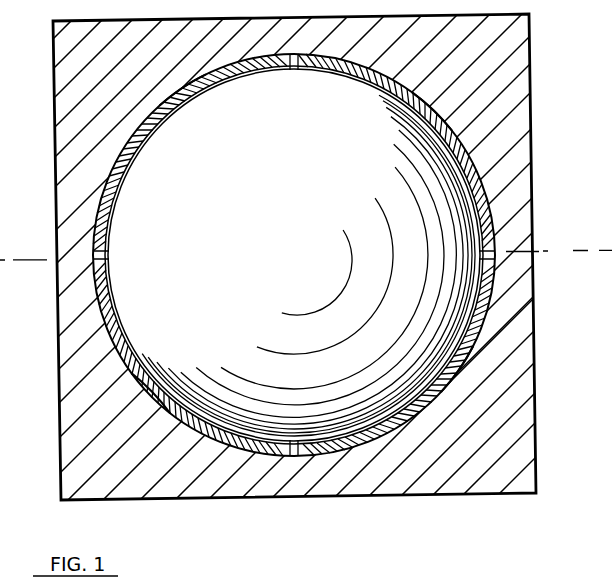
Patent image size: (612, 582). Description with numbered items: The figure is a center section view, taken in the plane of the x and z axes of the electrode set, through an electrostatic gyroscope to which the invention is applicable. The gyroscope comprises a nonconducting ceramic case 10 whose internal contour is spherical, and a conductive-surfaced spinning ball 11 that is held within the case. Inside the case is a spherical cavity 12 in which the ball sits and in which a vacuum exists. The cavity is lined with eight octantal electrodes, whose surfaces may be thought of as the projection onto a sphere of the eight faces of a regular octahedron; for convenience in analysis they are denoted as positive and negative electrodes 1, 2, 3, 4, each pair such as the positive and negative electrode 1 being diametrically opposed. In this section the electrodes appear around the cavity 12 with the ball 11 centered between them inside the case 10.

The nonconducting ceramic case 10 is at (479, 77).
The conductive-surfaced spinning ball 11 is at (439, 200).
The spherical cavity 12 is at (117, 160).
The electrode pair +1, - 1 is at (459, 369).
The electrode pair +2, - 2 is at (181, 90).
The electrode pair +3, - 3 is at (437, 106).
The electrode pair +4, - 4 is at (145, 400).